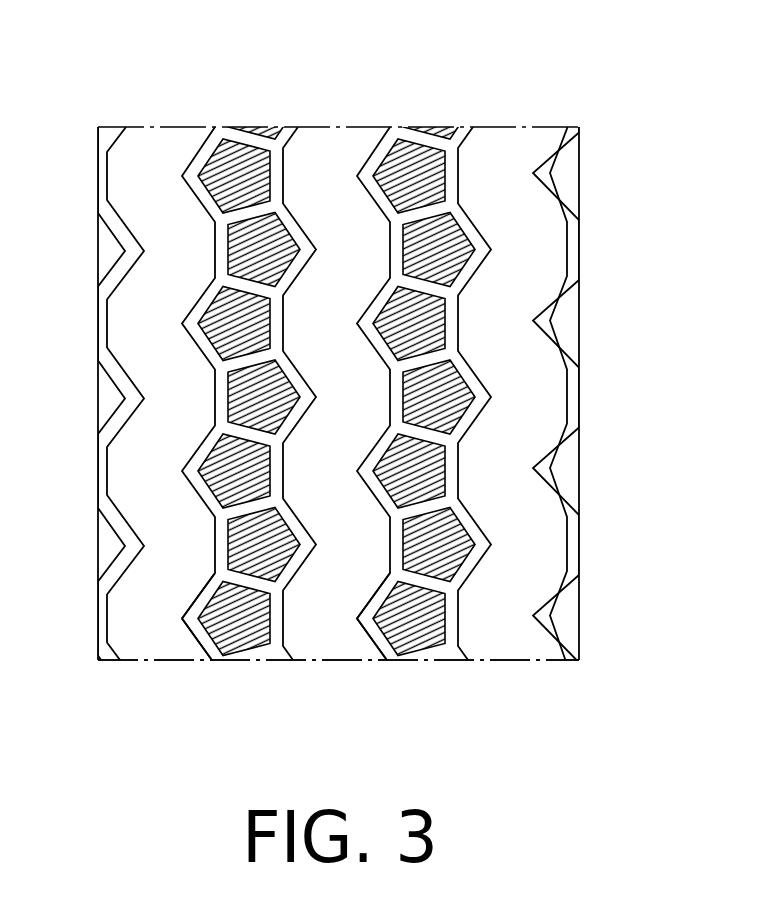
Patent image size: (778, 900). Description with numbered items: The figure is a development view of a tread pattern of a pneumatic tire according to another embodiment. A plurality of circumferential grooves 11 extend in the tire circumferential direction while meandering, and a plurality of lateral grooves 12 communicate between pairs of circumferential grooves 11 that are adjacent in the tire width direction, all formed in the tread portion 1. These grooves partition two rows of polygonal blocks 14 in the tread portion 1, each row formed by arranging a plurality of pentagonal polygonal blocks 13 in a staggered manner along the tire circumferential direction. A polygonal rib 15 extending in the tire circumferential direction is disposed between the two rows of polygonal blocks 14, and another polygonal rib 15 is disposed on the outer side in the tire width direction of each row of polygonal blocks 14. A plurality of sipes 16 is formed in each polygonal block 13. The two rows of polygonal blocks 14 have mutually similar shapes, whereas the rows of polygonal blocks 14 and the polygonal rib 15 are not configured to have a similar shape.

The tread portion 1 is at (546, 124).
The circumferential groove 11 is at (110, 142).
The lateral groove 12 is at (260, 210).
The polygonal block 13 is at (243, 655).
The row of polygonal blocks 14 is at (286, 596).
The polygonal rib 15 is at (148, 640).
The sipe 16 is at (228, 635).